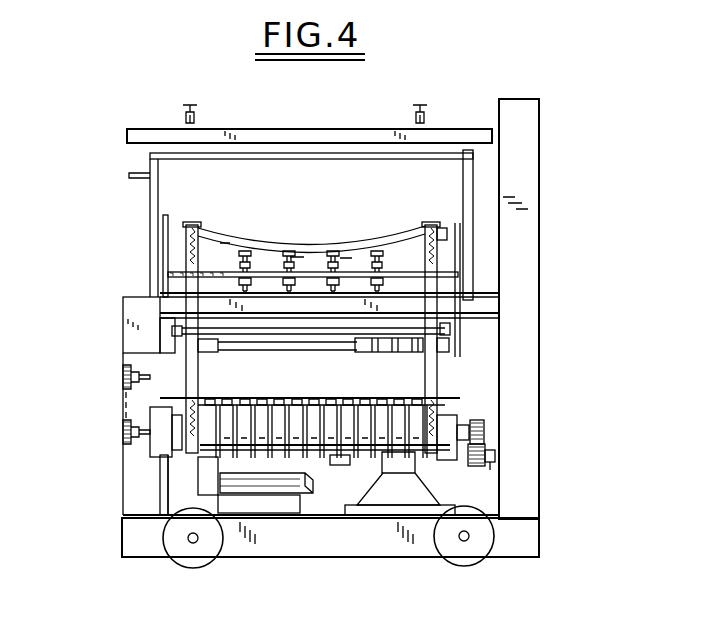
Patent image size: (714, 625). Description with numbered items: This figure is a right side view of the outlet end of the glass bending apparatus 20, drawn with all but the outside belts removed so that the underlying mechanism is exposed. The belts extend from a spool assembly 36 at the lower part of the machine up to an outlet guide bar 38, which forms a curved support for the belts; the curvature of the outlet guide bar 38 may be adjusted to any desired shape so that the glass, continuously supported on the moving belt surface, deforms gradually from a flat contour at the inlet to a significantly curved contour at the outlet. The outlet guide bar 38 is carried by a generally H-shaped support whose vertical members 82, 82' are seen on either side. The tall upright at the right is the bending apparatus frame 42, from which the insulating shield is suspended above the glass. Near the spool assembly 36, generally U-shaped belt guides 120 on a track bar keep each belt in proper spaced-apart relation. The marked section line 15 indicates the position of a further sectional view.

The glass bending apparatus 20 is at (566, 151).
The bending apparatus frame 42 is at (540, 258).
The vertical member 82 is at (148, 337).
The vertical member 82' is at (509, 322).
The outlet guide bar 38 is at (322, 242).
The U-shaped belt guides 120 is at (404, 353).
The spool assembly 36 is at (200, 450).
The section line 15 is at (110, 358).